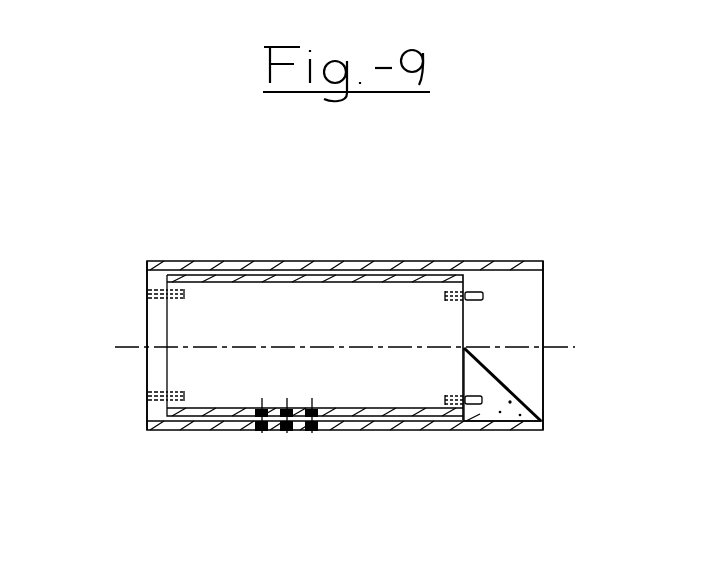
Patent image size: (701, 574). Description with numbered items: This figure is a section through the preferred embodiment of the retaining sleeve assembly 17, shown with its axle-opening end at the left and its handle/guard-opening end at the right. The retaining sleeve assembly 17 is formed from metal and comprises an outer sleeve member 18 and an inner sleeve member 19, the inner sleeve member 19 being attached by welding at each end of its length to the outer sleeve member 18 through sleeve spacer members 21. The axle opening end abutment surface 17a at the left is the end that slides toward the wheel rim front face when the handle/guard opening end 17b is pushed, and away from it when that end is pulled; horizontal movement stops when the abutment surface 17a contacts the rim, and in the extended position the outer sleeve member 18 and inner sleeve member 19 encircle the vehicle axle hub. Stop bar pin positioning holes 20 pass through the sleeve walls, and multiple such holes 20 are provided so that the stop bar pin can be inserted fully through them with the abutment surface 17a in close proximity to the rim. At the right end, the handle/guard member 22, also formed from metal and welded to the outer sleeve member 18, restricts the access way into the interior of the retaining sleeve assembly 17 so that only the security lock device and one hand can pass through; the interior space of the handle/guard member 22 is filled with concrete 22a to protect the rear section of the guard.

The retaining sleeve assembly 17 is at (282, 331).
The axle opening end abutment surface 17a is at (147, 286).
The handle/guard opening end 17b is at (545, 288).
The outer sleeve member 18 is at (385, 431).
The inner sleeve member 19 is at (387, 283).
The stop bar pin positioning holes 20 is at (262, 432).
The sleeve spacer members 21 is at (148, 297).
The handle/guard member 22 is at (517, 397).
The concrete 22a is at (478, 415).